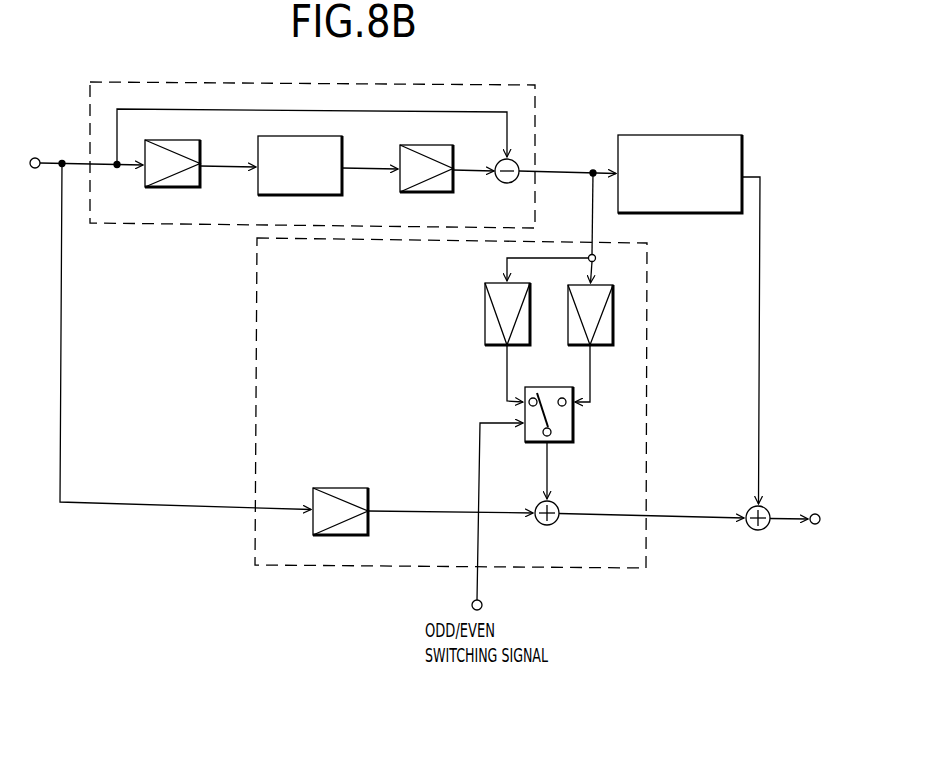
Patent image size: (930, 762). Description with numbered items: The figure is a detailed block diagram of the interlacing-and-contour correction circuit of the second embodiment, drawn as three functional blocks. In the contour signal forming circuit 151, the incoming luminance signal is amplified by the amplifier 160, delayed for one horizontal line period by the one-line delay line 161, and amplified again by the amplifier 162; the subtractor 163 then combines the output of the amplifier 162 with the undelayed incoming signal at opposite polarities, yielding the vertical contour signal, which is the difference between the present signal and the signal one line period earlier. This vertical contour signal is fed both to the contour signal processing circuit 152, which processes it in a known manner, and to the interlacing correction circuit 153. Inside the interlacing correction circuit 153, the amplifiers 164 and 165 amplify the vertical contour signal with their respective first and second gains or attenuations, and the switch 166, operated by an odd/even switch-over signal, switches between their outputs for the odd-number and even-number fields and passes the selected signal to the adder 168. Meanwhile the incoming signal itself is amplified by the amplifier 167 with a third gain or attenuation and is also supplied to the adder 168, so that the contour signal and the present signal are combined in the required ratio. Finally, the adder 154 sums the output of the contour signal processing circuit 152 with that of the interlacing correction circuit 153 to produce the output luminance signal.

The contour signal forming circuit 151 is at (508, 84).
The contour signal processing circuit 152 is at (668, 135).
The interlacing correction circuit 153 is at (647, 320).
The adder 154 is at (766, 509).
The amplifier 160 is at (190, 140).
The 1H delay line 161 is at (330, 136).
The amplifier 162 is at (440, 145).
The subtractor 163 is at (500, 182).
The amplifier 164 is at (485, 318).
The amplifier 165 is at (613, 335).
The switch 166 is at (573, 425).
The amplifier 167 is at (348, 488).
The adder 168 is at (556, 503).